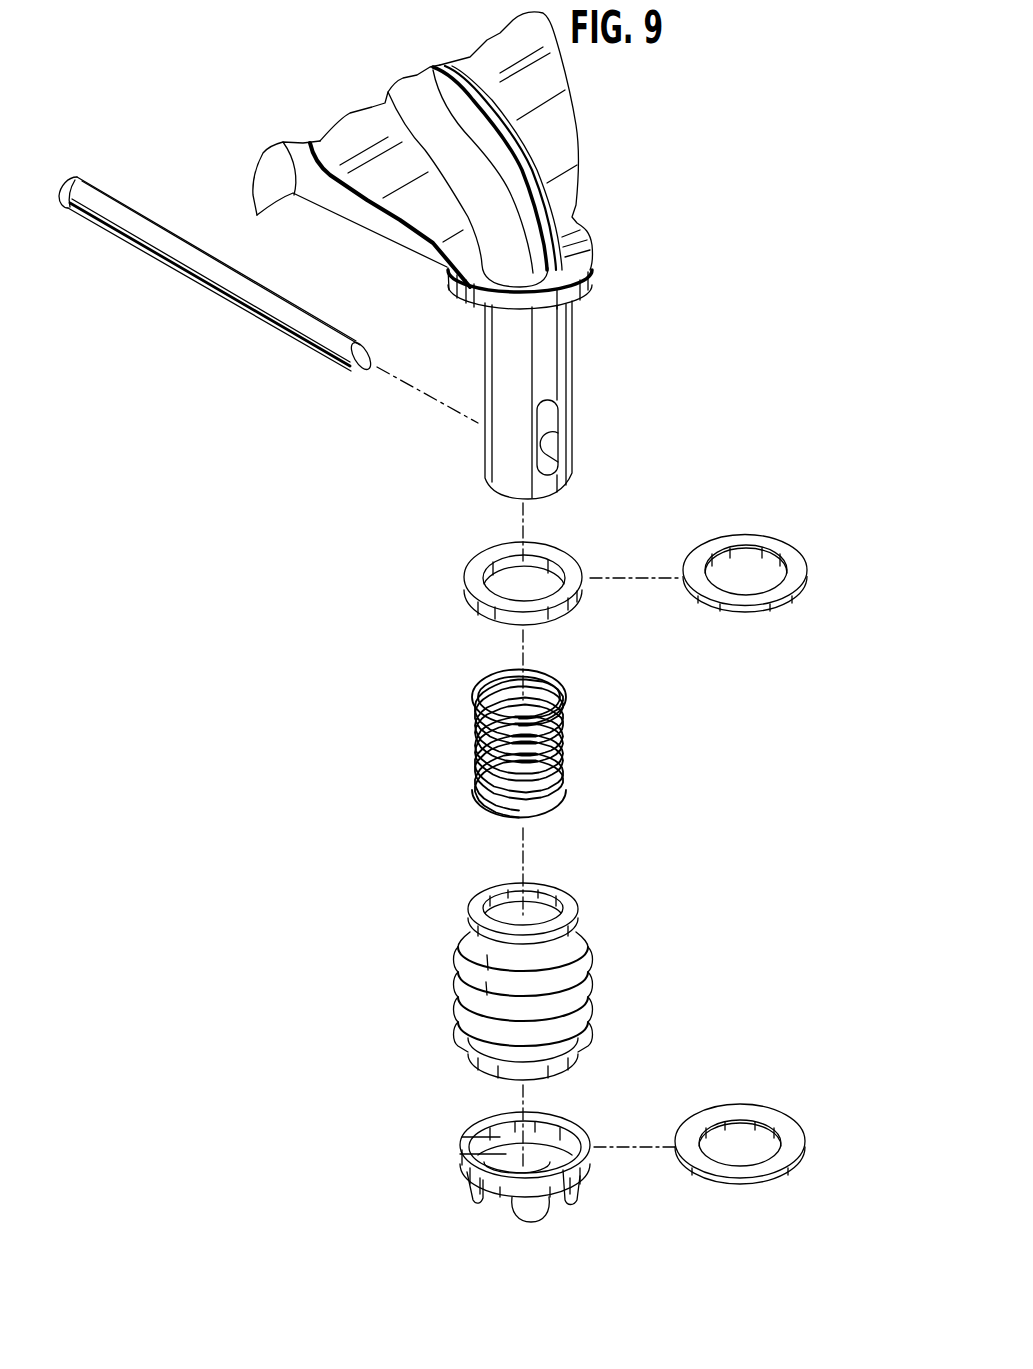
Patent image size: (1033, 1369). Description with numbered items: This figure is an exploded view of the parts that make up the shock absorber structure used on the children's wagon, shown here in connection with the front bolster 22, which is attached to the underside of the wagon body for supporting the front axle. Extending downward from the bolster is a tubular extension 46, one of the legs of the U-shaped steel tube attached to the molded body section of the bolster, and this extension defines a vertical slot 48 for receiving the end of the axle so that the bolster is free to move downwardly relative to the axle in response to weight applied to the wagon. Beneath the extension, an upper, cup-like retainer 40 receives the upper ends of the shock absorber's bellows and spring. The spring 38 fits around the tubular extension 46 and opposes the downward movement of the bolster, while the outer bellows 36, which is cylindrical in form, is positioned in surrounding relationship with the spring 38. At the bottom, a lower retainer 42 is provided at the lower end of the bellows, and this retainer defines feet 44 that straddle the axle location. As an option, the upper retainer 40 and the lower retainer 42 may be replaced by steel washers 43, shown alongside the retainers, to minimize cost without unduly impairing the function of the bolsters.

The front bolster 22 is at (595, 175).
The tubular extension 46 is at (560, 339).
The vertical slot 48 is at (556, 456).
The upper retainer 40 is at (467, 577).
The steel washer 43 is at (773, 541).
The spring 38 is at (475, 748).
The outer bellows 36 is at (588, 1007).
The lower retainer 42 is at (462, 1145).
The feet 44 is at (537, 1207).